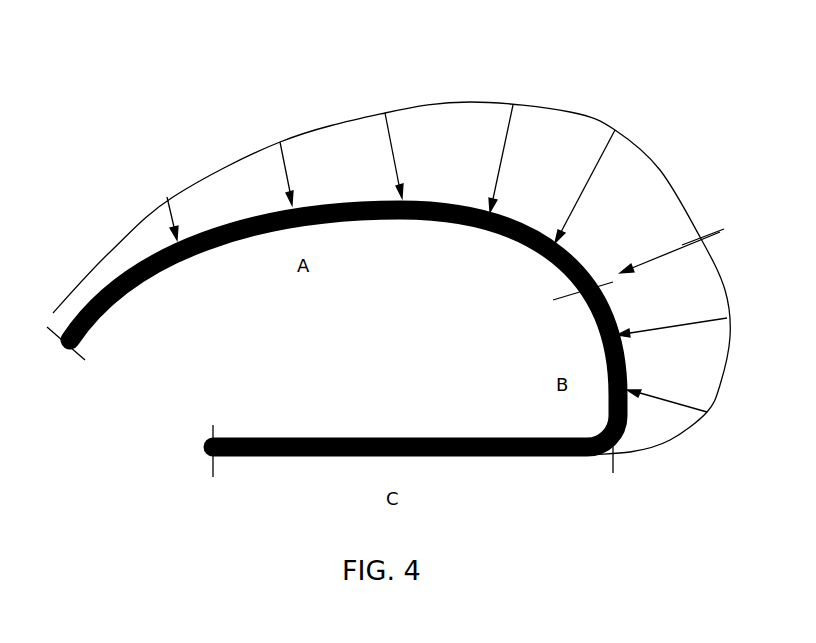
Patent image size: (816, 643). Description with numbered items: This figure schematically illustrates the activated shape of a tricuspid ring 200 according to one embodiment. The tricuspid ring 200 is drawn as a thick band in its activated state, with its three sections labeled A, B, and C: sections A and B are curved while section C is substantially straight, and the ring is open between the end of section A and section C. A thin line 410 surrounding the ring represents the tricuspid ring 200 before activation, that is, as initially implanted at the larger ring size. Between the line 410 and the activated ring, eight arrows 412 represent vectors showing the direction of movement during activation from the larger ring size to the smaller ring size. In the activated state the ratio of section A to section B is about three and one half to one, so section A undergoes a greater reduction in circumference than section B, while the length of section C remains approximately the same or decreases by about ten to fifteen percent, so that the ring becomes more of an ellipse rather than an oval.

The tricuspid ring 200 is at (433, 205).
The line 410 is at (570, 112).
The arrows 412 is at (283, 165).